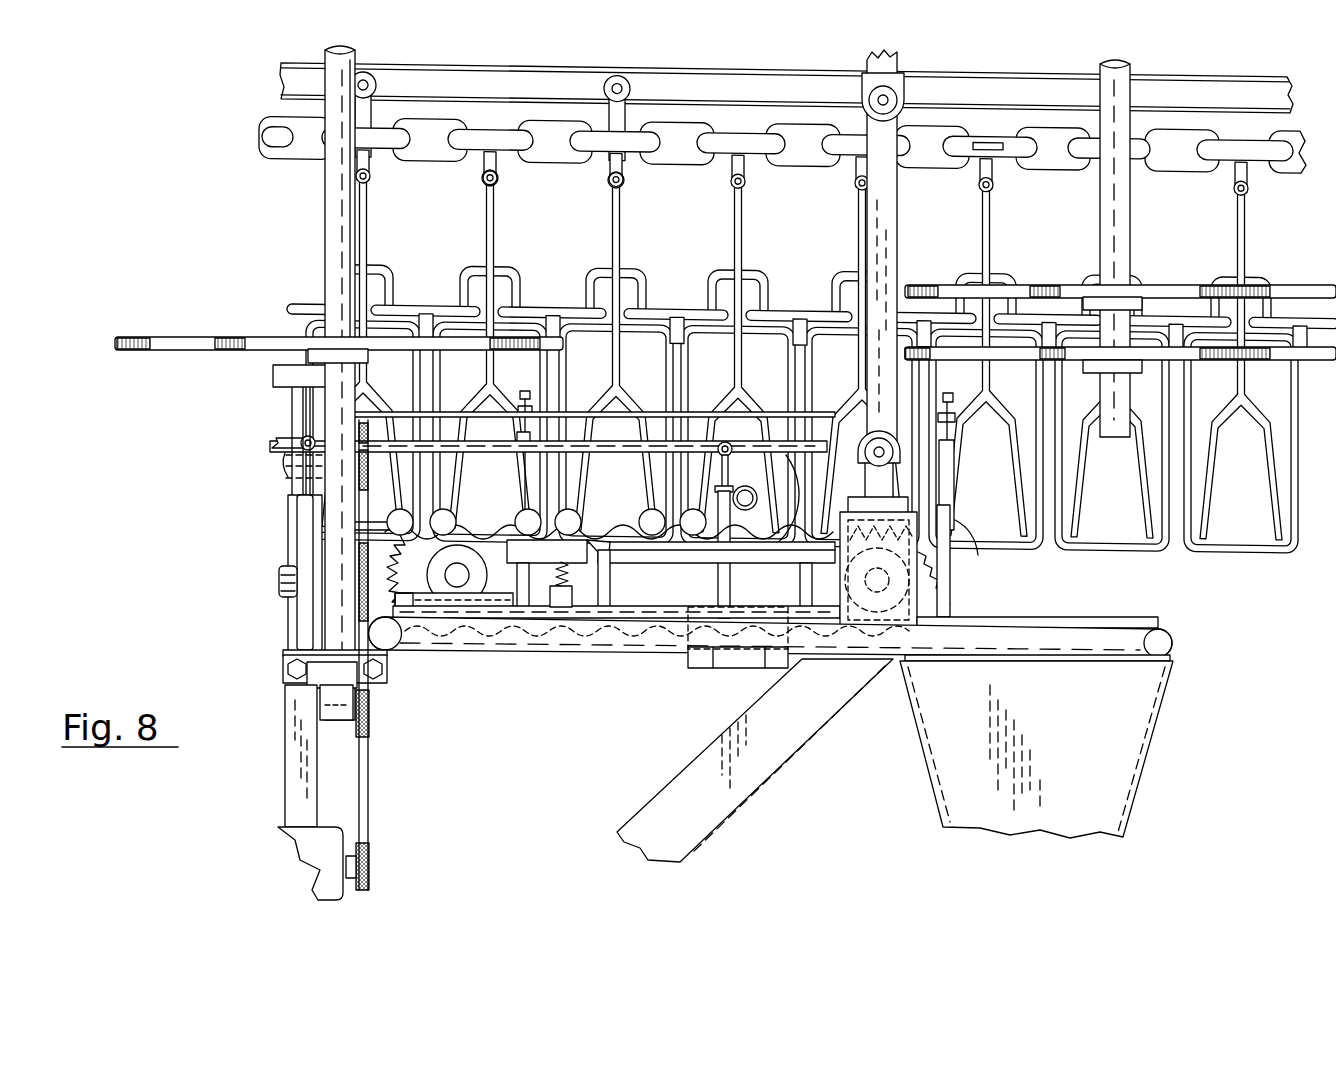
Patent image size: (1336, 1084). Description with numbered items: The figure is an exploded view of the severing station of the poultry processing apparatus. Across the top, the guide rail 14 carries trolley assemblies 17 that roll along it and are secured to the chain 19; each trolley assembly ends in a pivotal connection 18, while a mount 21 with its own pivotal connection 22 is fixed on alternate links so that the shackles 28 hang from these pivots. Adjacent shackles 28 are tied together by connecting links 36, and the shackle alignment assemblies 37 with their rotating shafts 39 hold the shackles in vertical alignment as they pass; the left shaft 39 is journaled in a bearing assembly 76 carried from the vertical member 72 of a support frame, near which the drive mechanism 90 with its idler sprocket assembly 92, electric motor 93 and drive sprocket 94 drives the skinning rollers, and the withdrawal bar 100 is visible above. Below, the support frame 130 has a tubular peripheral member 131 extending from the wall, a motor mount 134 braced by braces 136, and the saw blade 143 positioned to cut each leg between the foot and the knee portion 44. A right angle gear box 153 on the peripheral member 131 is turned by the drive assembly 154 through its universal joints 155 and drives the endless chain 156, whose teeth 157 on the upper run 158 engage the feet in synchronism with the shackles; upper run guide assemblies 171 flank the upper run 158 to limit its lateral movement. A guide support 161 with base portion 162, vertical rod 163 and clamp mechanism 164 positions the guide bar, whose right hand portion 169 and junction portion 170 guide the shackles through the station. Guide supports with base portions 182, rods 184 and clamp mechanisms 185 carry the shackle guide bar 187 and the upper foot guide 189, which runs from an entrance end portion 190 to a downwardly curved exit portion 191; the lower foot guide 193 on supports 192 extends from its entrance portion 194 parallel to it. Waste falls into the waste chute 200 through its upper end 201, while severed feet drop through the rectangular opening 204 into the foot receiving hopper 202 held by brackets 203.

The guide rail 14 is at (469, 72).
The trolley assembly 17 is at (612, 75).
The pivotal connection 18 is at (612, 179).
The chain 19 is at (703, 119).
The mount 21 is at (988, 132).
The pivotal connection 22 is at (484, 176).
The shackle 28 is at (705, 295).
The connecting link 36 is at (419, 304).
The shackle alignment assembly 37 is at (152, 337).
The shaft 39 is at (328, 222).
The knee portion 44 is at (518, 524).
The vertical member 72 is at (296, 778).
The bearing assembly 76 is at (325, 668).
The drive mechanism 90 is at (368, 797).
The idler sprocket assembly 92 is at (370, 702).
The electric motor 93 is at (305, 860).
The drive sprocket 94 is at (367, 882).
The withdrawal bar 100 is at (282, 377).
The support frame 130 is at (601, 662).
The tubular peripheral member 131 is at (456, 650).
The motor mount 134 is at (733, 662).
The brace 136 is at (700, 665).
The saw blade 143 is at (744, 465).
The right angle gear box 153 is at (840, 592).
The drive assembly 154 is at (893, 228).
The universal joint 155 is at (893, 96).
The endless chain 156 is at (494, 638).
The teeth 157 is at (392, 600).
The upper run 158 is at (473, 537).
The guide support 161 is at (300, 537).
The base portion 162 is at (300, 633).
The rod 163 is at (300, 462).
The clamp mechanism 164 is at (303, 439).
The right hand portion 169 is at (627, 446).
The junction portion 170 is at (276, 443).
The upper run guide assembly 171 is at (548, 575).
The base portion 182 is at (950, 598).
The rod 184 is at (519, 432).
The clamp mechanism 185 is at (523, 392).
The shackle guide bar 187 is at (648, 410).
The upper foot guide 189 is at (622, 510).
The entrance end portion 190 is at (380, 510).
The exit portion 191 is at (985, 556).
The support 192 is at (610, 598).
The lower foot guide 193 is at (672, 550).
The entrance portion 194 is at (580, 560).
The waste chute 200 is at (755, 760).
The upper end 201 is at (867, 652).
The foot receiving hopper 202 is at (1036, 749).
The bracket 203 is at (920, 660).
The rectangular opening 204 is at (1080, 661).